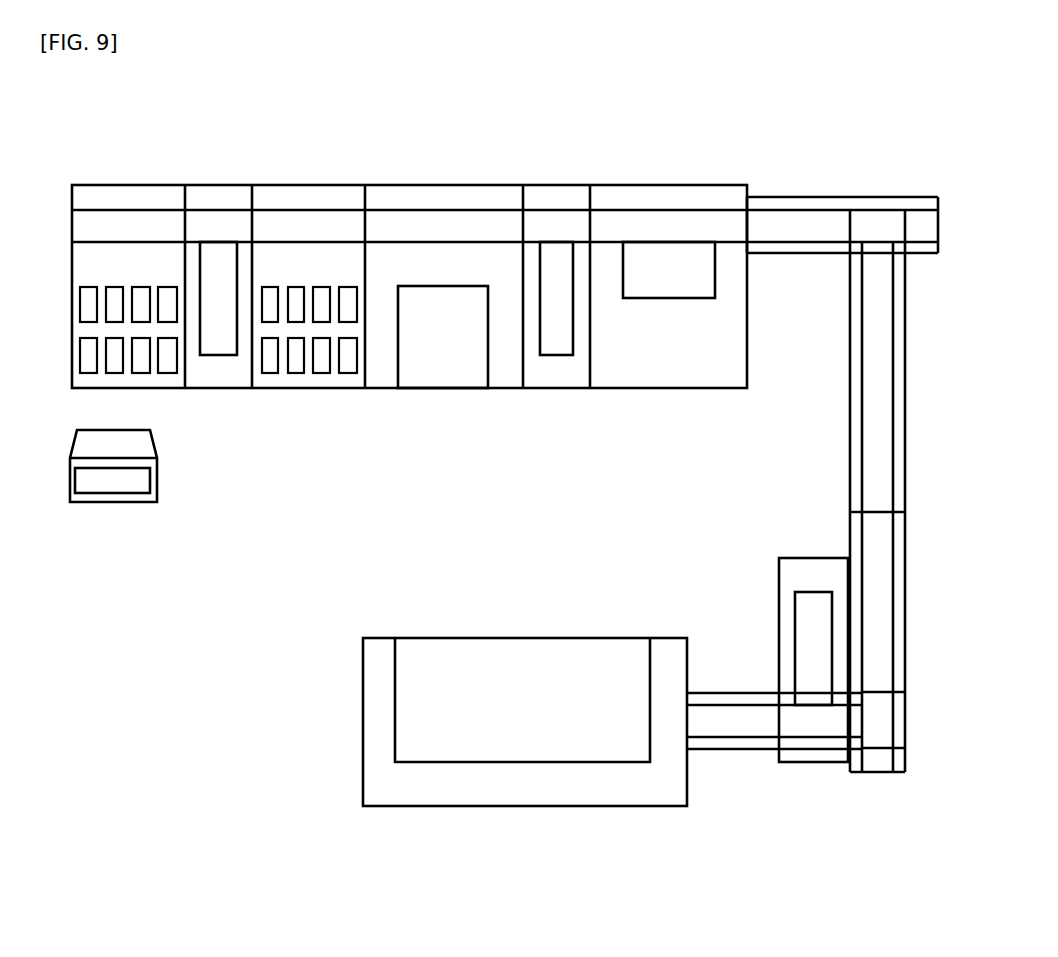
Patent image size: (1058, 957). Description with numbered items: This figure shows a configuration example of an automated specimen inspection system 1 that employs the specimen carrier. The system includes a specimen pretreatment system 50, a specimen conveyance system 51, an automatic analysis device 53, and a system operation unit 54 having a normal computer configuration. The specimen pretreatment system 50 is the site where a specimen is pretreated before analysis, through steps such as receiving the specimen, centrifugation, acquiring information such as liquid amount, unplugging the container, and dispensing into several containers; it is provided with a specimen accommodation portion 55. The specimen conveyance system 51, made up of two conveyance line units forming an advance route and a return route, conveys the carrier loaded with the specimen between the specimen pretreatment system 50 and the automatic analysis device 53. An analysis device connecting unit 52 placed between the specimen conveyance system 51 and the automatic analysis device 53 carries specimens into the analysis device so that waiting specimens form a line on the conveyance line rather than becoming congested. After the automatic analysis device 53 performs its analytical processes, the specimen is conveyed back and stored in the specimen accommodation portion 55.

The automated specimen inspection system 1 is at (713, 172).
The specimen pretreatment system 50 is at (422, 185).
The specimen conveyance system 51 is at (883, 197).
The analysis device connecting unit 52 is at (820, 560).
The automatic analysis device 53 is at (522, 642).
The system operation unit 54 is at (157, 478).
The specimen accommodation portion 55 is at (330, 388).